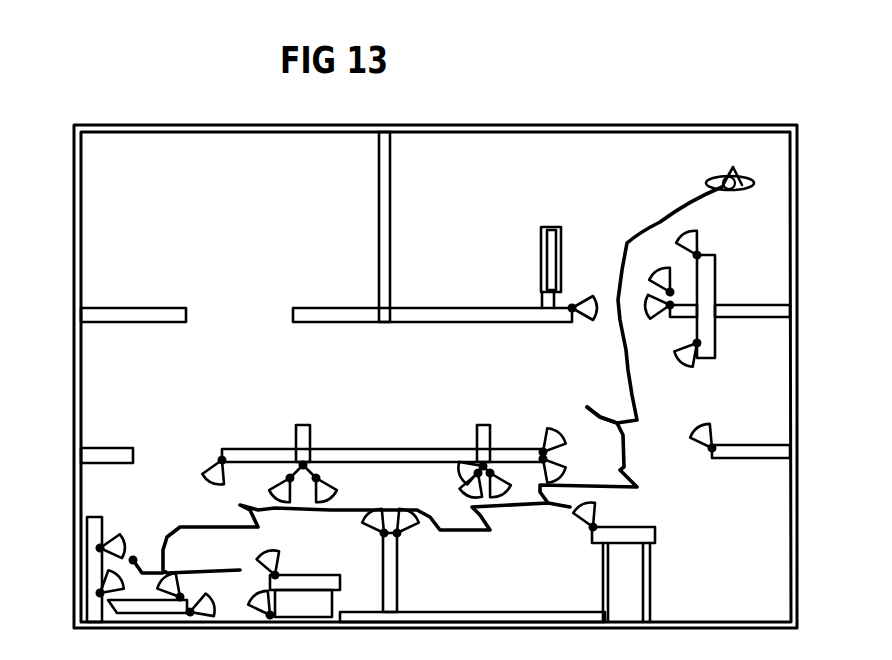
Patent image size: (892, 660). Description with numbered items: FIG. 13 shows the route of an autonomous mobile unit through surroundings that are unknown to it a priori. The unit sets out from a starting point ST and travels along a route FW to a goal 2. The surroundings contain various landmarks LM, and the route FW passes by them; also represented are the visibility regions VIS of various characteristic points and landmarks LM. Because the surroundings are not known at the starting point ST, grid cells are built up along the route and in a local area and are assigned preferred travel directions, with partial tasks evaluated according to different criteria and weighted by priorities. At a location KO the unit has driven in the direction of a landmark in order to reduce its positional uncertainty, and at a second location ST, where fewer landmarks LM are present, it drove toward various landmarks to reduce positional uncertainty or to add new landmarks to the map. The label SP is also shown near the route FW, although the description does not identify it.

The goal 2 is at (737, 192).
The visibility regions VIS is at (213, 480).
The landmarks LM is at (397, 452).
The blocking point SP is at (600, 417).
The route FW is at (643, 403).
The starting point ST is at (137, 557).
The location KO is at (438, 532).